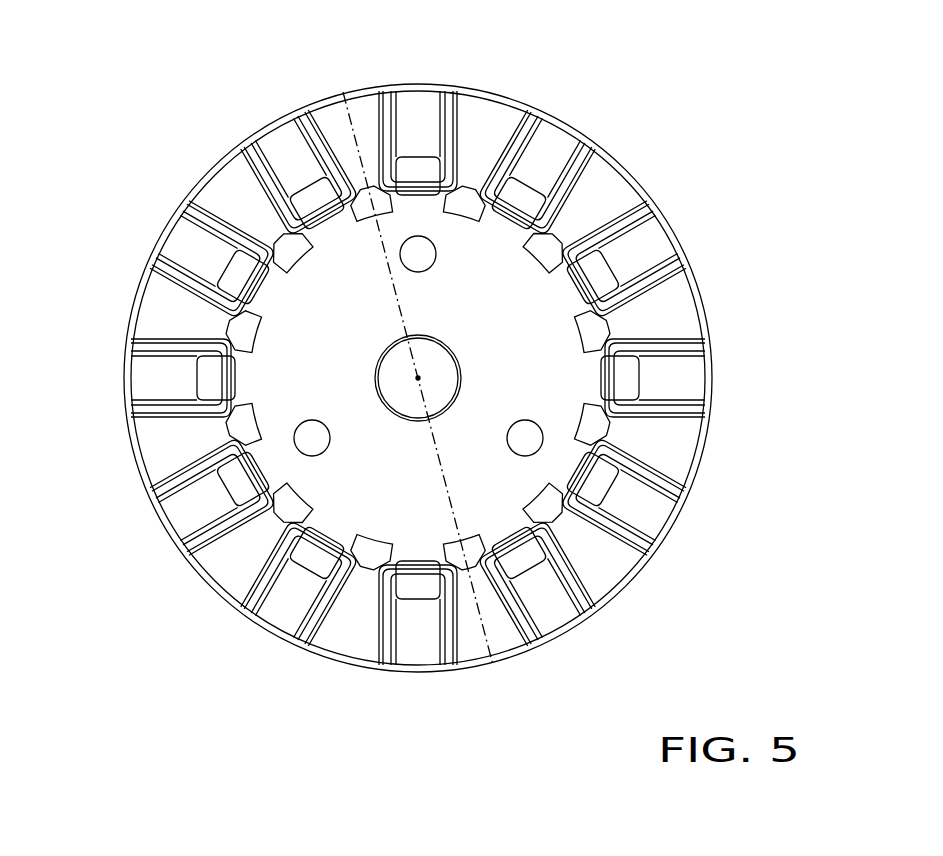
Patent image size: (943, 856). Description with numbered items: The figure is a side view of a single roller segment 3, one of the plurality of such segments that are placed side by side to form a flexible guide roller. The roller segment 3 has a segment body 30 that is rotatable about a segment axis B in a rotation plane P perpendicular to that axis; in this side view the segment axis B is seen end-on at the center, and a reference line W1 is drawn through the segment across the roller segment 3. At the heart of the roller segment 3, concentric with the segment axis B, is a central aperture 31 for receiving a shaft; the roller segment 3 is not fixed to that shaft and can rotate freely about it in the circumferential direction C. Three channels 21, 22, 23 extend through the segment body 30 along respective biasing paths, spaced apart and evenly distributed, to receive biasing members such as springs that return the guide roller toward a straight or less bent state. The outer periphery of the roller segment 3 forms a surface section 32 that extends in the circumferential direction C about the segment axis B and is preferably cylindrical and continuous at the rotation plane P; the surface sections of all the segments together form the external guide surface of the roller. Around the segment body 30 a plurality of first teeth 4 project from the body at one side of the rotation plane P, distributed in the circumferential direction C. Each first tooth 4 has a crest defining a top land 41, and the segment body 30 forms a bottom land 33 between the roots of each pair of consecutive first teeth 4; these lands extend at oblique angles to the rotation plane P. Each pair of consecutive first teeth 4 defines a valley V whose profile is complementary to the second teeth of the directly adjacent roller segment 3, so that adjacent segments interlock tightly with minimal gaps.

The roller segment 3 is at (385, 365).
The first teeth 4 is at (553, 137).
The channel 21 is at (408, 258).
The channel 22 is at (317, 435).
The channel 23 is at (523, 432).
The segment body 30 is at (385, 384).
The central aperture 31 is at (435, 362).
The surface section 32 is at (505, 92).
The bottom land 33 is at (232, 567).
The top land 41 is at (178, 510).
The segment axis B is at (418, 381).
The valley V is at (270, 527).
The winding axis line W1 is at (512, 742).
The circumferential direction C is at (182, 111).
The rotation plane P is at (768, 213).